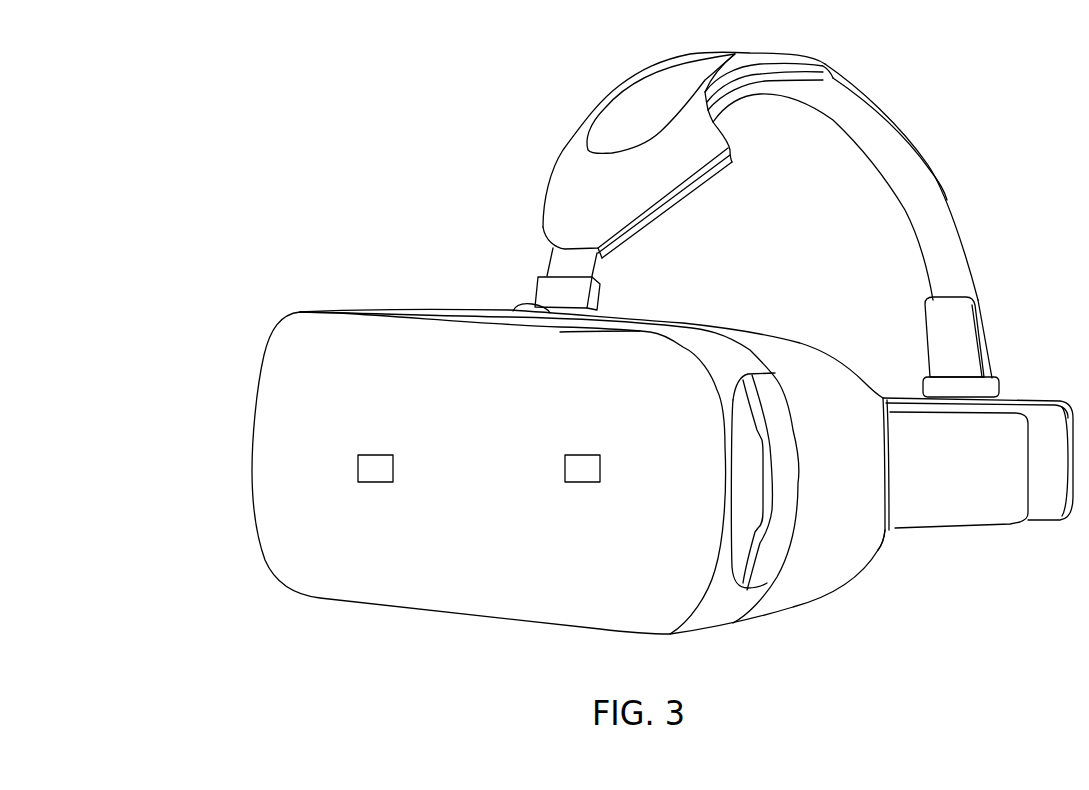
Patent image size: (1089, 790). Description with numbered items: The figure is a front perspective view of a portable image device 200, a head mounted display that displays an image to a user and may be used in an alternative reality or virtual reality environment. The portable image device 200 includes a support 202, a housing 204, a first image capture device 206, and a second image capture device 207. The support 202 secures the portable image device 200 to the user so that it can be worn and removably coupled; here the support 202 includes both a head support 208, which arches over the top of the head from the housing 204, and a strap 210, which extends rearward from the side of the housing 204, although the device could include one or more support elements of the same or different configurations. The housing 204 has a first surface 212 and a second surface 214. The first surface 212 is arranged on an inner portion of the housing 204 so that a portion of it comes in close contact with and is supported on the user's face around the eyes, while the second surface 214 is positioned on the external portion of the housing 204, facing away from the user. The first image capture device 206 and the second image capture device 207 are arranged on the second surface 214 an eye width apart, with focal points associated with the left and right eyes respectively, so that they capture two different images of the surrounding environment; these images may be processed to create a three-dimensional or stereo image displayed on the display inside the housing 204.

The portable image device 200 is at (312, 142).
The support 202 is at (916, 157).
The housing 204 is at (847, 563).
The first image capture device 206 is at (593, 463).
The second image capture device 207 is at (367, 465).
The head support 208 is at (753, 57).
The strap 210 is at (1005, 423).
The first surface 212 is at (880, 543).
The second surface 214 is at (252, 467).